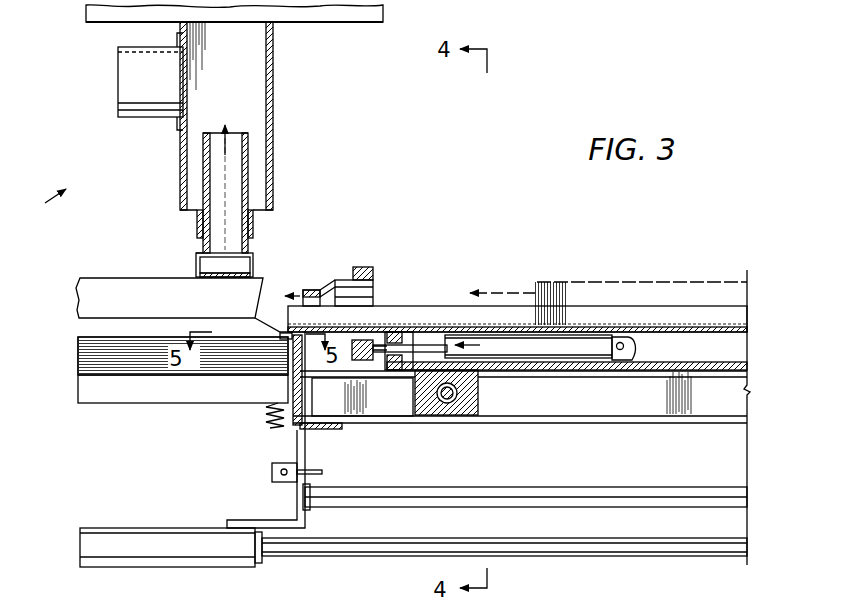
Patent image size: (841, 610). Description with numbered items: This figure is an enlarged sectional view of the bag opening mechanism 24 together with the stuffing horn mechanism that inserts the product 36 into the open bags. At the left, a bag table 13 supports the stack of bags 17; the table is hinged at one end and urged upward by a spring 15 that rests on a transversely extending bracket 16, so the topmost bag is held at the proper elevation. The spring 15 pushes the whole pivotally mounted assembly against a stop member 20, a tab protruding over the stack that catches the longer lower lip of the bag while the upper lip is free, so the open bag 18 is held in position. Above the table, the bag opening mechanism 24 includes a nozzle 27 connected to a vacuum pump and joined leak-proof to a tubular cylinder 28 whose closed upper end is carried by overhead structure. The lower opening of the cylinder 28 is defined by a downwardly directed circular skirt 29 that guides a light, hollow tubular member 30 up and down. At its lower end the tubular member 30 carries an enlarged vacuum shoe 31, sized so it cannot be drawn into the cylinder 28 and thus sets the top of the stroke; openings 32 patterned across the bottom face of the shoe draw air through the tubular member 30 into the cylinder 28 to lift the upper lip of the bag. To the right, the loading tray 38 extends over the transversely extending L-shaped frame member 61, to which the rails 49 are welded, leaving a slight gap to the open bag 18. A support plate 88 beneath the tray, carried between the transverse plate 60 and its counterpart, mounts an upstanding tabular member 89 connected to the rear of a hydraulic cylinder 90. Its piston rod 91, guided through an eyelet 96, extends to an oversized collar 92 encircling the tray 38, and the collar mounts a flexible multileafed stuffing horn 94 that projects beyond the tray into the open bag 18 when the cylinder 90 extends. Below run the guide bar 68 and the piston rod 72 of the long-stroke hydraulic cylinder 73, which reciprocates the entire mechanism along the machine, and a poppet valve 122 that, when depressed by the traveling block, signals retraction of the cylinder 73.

The bag table 13 is at (86, 404).
The spring 15 is at (270, 420).
The bracket 16 is at (266, 520).
The stack of bags 17 is at (78, 355).
The open bag 18 is at (78, 298).
The stop member 20 is at (284, 308).
The bag opening mechanism 24 is at (42, 203).
The nozzle 27 is at (118, 88).
The tubular cylinder 28 is at (273, 78).
The skirt 29 is at (253, 229).
The tubular member 30 is at (248, 160).
The vacuum shoe 31 is at (198, 252).
The openings 32 is at (213, 266).
The product 36 is at (659, 282).
The loading tray 38 is at (458, 324).
The rail 49 is at (591, 405).
The plate 60 is at (480, 396).
The L-shaped member 61 is at (320, 430).
The guide bar 68 is at (491, 487).
The piston rod 72 is at (583, 556).
The hydraulic cylinder 73 is at (143, 528).
The support plate 88 is at (713, 360).
The tabular member 89 is at (635, 350).
The hydraulic cylinder 90 is at (563, 350).
The piston rod 91 is at (413, 343).
The collar 92 is at (360, 267).
The stuffing horn 94 is at (325, 285).
The eyelet 96 is at (383, 335).
The poppet valve 122 is at (322, 472).